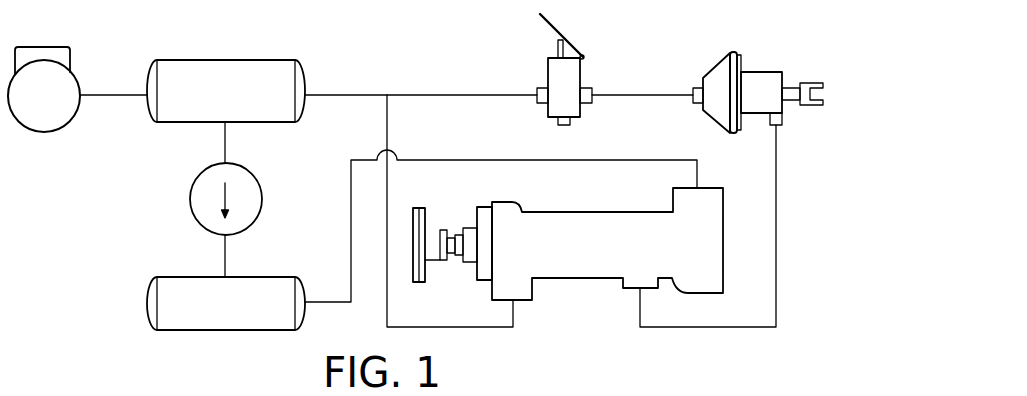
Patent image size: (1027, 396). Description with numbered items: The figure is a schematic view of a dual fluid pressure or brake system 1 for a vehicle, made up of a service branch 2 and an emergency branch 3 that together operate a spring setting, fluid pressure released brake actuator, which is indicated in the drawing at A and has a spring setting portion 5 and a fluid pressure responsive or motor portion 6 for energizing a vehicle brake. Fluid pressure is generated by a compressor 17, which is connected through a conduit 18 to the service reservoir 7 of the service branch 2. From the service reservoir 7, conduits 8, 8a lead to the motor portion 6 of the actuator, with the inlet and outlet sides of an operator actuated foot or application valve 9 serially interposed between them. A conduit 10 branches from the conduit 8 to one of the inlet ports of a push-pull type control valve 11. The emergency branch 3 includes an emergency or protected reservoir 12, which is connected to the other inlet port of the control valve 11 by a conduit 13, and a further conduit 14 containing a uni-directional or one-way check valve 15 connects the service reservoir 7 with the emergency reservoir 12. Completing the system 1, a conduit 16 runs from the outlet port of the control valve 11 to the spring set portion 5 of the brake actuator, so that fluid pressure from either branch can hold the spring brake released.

The dual fluid pressure brake system 1 is at (749, 41).
The service branch 2 is at (147, 140).
The emergency branch 3 is at (137, 345).
The spring setting portion 5 is at (770, 101).
The fluid pressure responsive motor portion 6 is at (713, 117).
The service reservoir 7 is at (245, 62).
The conduit 8 is at (340, 94).
The conduit 8a is at (652, 88).
The application valve 9 is at (569, 103).
The conduit 10 is at (388, 202).
The push-pull control valve 11 is at (603, 258).
The emergency reservoir 12 is at (233, 332).
The conduit 13 is at (350, 242).
The conduit 14 is at (223, 255).
The one-way check valve 15 is at (190, 198).
The conduit 16 is at (777, 247).
The compressor 17 is at (47, 50).
The conduit 18 is at (97, 94).
The brake valve unit A is at (790, 62).